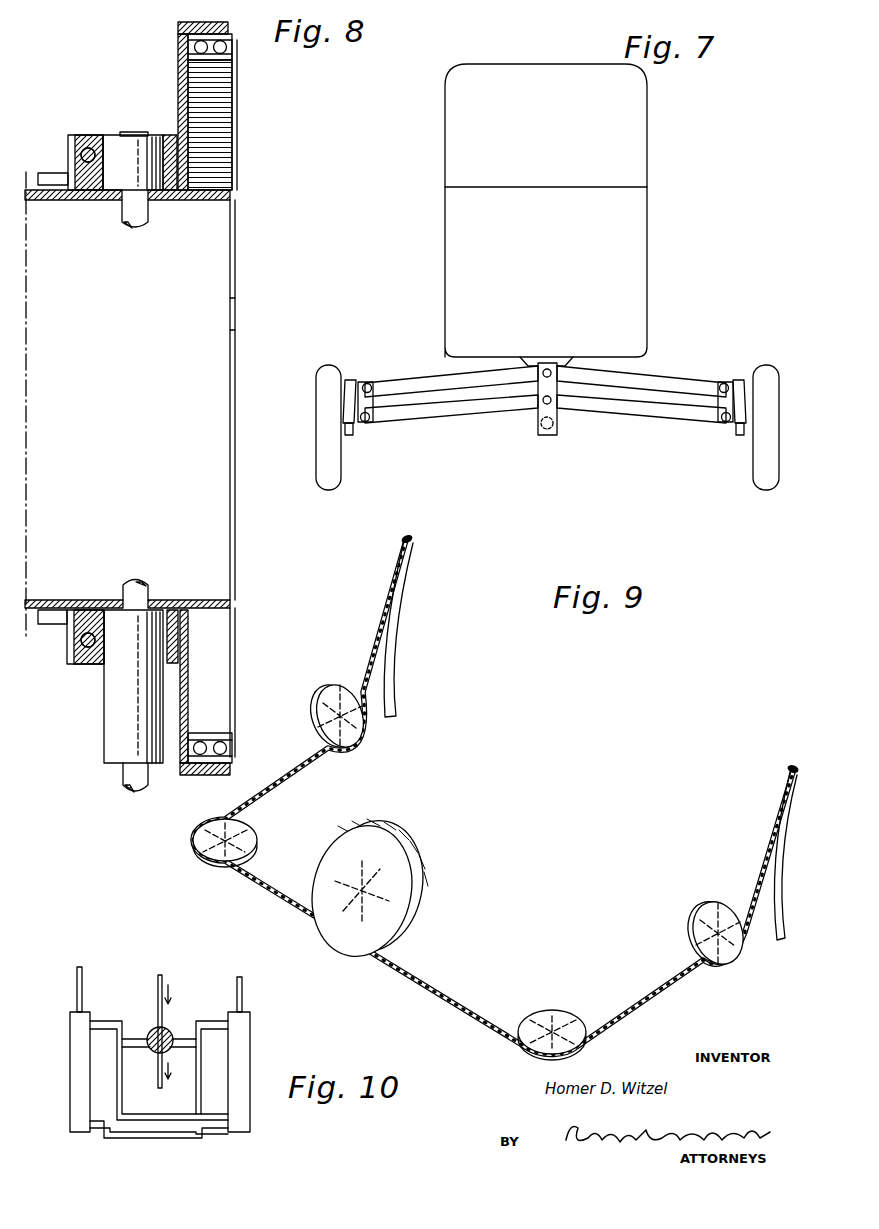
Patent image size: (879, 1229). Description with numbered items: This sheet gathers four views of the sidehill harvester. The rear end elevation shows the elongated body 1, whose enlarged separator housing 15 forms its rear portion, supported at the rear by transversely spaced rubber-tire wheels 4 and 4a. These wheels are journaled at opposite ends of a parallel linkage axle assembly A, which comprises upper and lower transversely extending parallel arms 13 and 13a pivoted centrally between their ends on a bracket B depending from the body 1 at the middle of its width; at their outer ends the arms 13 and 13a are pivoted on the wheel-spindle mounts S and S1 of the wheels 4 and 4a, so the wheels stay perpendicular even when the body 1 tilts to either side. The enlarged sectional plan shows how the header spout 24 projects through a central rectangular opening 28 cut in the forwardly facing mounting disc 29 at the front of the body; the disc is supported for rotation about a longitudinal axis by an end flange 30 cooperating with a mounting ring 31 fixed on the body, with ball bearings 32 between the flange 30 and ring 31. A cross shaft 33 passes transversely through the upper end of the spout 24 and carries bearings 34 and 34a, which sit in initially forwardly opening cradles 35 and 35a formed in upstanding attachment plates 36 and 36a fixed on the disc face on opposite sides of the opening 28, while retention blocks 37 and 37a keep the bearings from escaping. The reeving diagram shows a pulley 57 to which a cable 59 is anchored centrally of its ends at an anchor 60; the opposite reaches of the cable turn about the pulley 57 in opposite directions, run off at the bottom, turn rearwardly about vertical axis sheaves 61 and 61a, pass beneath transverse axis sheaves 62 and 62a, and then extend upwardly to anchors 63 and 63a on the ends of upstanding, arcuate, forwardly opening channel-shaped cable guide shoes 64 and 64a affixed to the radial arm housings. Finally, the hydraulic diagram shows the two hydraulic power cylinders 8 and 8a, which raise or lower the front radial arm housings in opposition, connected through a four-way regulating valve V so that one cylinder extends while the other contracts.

In FIG. 7, the elongated body 1 is at (652, 150).
In FIG. 7, the separator housing 15 is at (640, 283).
In FIG. 7, the rear wheel 4 is at (334, 455).
In FIG. 7, the rear wheel 4a is at (757, 455).
In FIG. 7, the wheel-spindle mount S is at (352, 380).
In FIG. 7, the wheel-spindle mount S1 is at (739, 379).
In FIG. 7, the parallel linkage axle assembly A is at (422, 374).
In FIG. 7, the upper arm 13 is at (668, 382).
In FIG. 7, the lower arm 13a is at (494, 414).
In FIG. 7, the bracket B is at (556, 415).
In FIG. 8, the header spout 24 is at (49, 598).
In FIG. 8, the central rectangular opening 28 is at (190, 617).
In FIG. 8, the mounting disc 29 is at (178, 88).
In FIG. 8, the end flange 30 is at (178, 29).
In FIG. 8, the mounting ring 31 is at (216, 64).
In FIG. 8, the ball bearings 32 is at (234, 43).
In FIG. 8, the cross shaft 33 is at (136, 588).
In FIG. 8, the bearing 34 is at (126, 695).
In FIG. 8, the bearing 34a is at (130, 165).
In FIG. 8, the cradle 35 is at (68, 648).
In FIG. 8, the cradle 35a is at (68, 147).
In FIG. 8, the attachment plate 36 is at (46, 620).
In FIG. 8, the attachment plate 36a is at (55, 175).
In FIG. 8, the retention block 37 is at (90, 660).
In FIG. 8, the retention block 37a is at (88, 150).
In FIG. 9, the pulley 57 is at (398, 905).
In FIG. 9, the cable 59 is at (410, 986).
In FIG. 9, the anchor 60 is at (372, 827).
In FIG. 9, the vertical axis sheave 61 is at (549, 1014).
In FIG. 9, the vertical axis sheave 61a is at (250, 838).
In FIG. 9, the transverse axis sheave 62 is at (702, 925).
In FIG. 9, the transverse axis sheave 62a is at (326, 708).
In FIG. 9, the anchor 63 is at (789, 767).
In FIG. 9, the anchor 63a is at (413, 541).
In FIG. 9, the arcuate cable guide shoe 64 is at (772, 855).
In FIG. 9, the arcuate cable guide shoe 64a is at (398, 650).
In FIG. 10, the hydraulic power cylinder 8 is at (70, 1057).
In FIG. 10, the hydraulic power cylinder 8a is at (243, 1054).
In FIG. 10, the four-way regulating valve V is at (150, 1028).